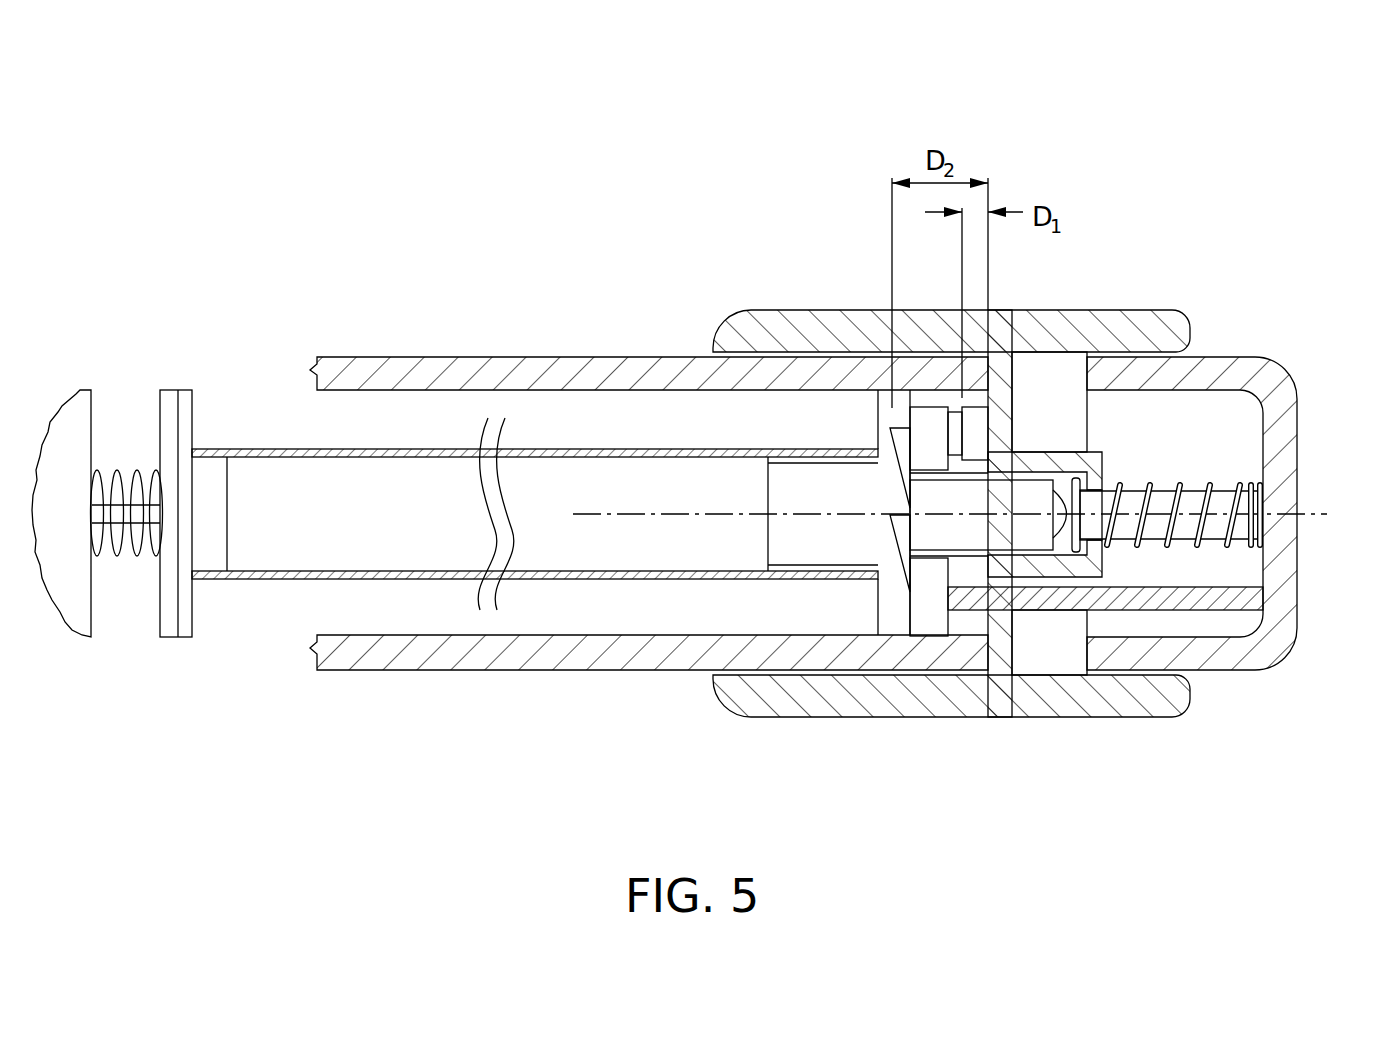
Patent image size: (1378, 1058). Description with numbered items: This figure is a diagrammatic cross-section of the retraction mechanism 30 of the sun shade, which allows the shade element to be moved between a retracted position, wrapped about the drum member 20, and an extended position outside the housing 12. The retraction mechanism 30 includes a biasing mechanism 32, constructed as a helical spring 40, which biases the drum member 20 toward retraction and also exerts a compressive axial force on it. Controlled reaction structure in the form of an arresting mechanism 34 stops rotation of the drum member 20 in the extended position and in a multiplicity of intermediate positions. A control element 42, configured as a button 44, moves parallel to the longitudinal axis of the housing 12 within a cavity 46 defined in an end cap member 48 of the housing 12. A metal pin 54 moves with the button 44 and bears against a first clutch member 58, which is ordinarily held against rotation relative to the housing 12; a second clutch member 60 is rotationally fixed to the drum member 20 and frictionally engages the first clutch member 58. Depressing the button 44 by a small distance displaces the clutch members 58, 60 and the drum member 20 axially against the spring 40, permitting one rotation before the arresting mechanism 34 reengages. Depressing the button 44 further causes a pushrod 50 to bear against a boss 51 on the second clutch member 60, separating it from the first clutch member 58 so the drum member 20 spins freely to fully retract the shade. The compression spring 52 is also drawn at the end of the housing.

The housing 12 is at (648, 357).
The drum member 20 is at (623, 449).
The retraction mechanism 30 is at (946, 300).
The biasing mechanism 32 is at (112, 476).
The arresting mechanism 34 is at (552, 614).
The helical spring 40 is at (130, 560).
The control element 42 is at (1171, 459).
The button 44 is at (1288, 381).
The cavity 46 is at (1068, 420).
The end cap member 48 is at (1063, 310).
The pushrod 50 is at (1210, 539).
The boss 51 is at (1014, 535).
The spring 52 is at (1268, 494).
The metal pin 54 is at (1052, 610).
The first clutch member 58 is at (921, 397).
The second clutch member 60 is at (897, 625).